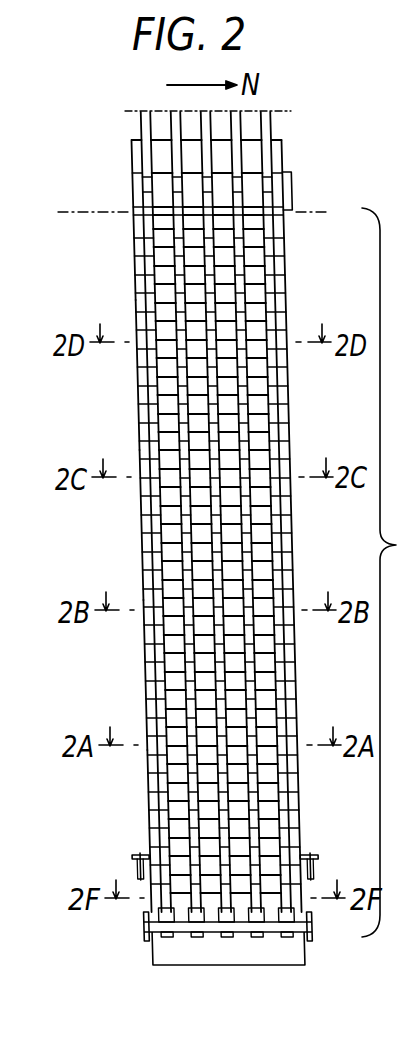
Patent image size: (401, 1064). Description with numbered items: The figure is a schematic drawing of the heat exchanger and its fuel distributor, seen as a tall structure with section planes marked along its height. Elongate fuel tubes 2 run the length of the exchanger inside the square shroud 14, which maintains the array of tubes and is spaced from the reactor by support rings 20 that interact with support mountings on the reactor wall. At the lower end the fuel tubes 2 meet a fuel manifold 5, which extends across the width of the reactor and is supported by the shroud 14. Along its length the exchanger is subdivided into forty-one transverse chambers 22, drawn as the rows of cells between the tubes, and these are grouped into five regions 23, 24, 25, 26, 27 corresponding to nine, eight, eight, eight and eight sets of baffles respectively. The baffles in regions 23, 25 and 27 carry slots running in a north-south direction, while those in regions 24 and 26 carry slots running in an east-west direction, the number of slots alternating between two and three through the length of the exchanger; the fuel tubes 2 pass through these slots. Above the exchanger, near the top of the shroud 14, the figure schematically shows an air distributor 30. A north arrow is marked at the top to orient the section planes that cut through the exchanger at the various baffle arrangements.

The fuel tube 2 is at (290, 410).
The fuel manifold 5 is at (217, 932).
The square shroud 14 is at (302, 688).
The support ring 20 is at (312, 858).
The transverse chamber 22 is at (257, 503).
The region 23 is at (145, 818).
The region 24 is at (142, 682).
The region 25 is at (138, 548).
The region 26 is at (136, 415).
The region 27 is at (130, 282).
The air distributor 30 is at (292, 190).